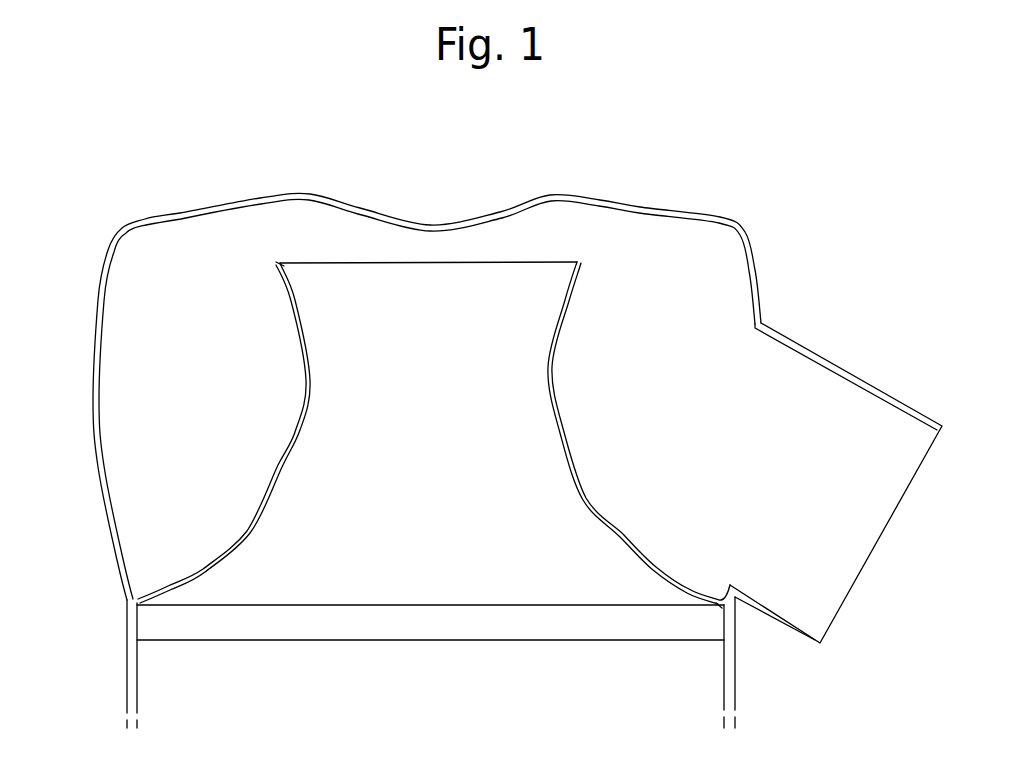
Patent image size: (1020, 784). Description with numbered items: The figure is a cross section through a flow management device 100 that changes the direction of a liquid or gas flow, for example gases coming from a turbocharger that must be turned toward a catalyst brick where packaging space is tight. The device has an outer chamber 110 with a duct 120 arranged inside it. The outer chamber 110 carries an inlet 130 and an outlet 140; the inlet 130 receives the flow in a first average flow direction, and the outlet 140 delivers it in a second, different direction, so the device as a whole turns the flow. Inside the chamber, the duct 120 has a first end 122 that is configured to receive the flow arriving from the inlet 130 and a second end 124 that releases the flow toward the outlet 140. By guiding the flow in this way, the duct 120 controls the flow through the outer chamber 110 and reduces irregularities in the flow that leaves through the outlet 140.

The flow management device 100 is at (499, 424).
The outer chamber 110 is at (105, 292).
The duct 120 is at (570, 480).
The first end 122 is at (273, 270).
The second end 124 is at (713, 608).
The inlet 130 is at (828, 367).
The outlet 140 is at (130, 693).